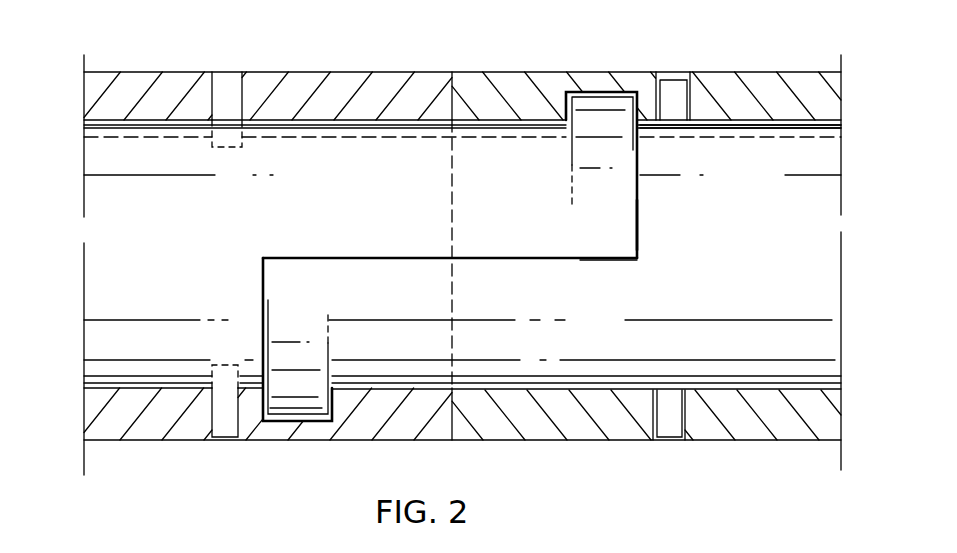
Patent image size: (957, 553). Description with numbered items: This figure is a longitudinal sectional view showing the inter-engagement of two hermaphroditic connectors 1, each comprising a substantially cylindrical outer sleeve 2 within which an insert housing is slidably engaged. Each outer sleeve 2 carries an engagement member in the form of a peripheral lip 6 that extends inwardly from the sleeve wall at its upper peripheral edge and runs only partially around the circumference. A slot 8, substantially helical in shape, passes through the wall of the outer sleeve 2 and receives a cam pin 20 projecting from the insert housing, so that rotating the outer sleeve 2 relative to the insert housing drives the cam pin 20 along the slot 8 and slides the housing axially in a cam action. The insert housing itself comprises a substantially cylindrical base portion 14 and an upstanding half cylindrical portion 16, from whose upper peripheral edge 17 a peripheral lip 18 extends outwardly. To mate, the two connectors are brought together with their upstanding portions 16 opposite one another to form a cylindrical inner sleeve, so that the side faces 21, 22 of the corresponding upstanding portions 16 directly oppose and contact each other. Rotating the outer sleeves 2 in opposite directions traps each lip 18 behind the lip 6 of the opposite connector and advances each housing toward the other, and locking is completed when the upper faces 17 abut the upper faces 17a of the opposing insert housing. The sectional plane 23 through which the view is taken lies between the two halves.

The hermaphroditic connector 1 is at (181, 62).
The outer sleeve 2 is at (300, 440).
The peripheral lip 6 is at (610, 90).
The slot 8 is at (222, 440).
The base portion 14 is at (767, 160).
The upstanding portion 16 is at (517, 352).
The upper peripheral edge 17 is at (642, 150).
The upper face 17a is at (637, 234).
The peripheral lip 18 is at (594, 100).
The cam pin 20 is at (229, 88).
The side face 21 is at (527, 256).
The side face 22 is at (602, 262).
The parting line 23 is at (453, 75).